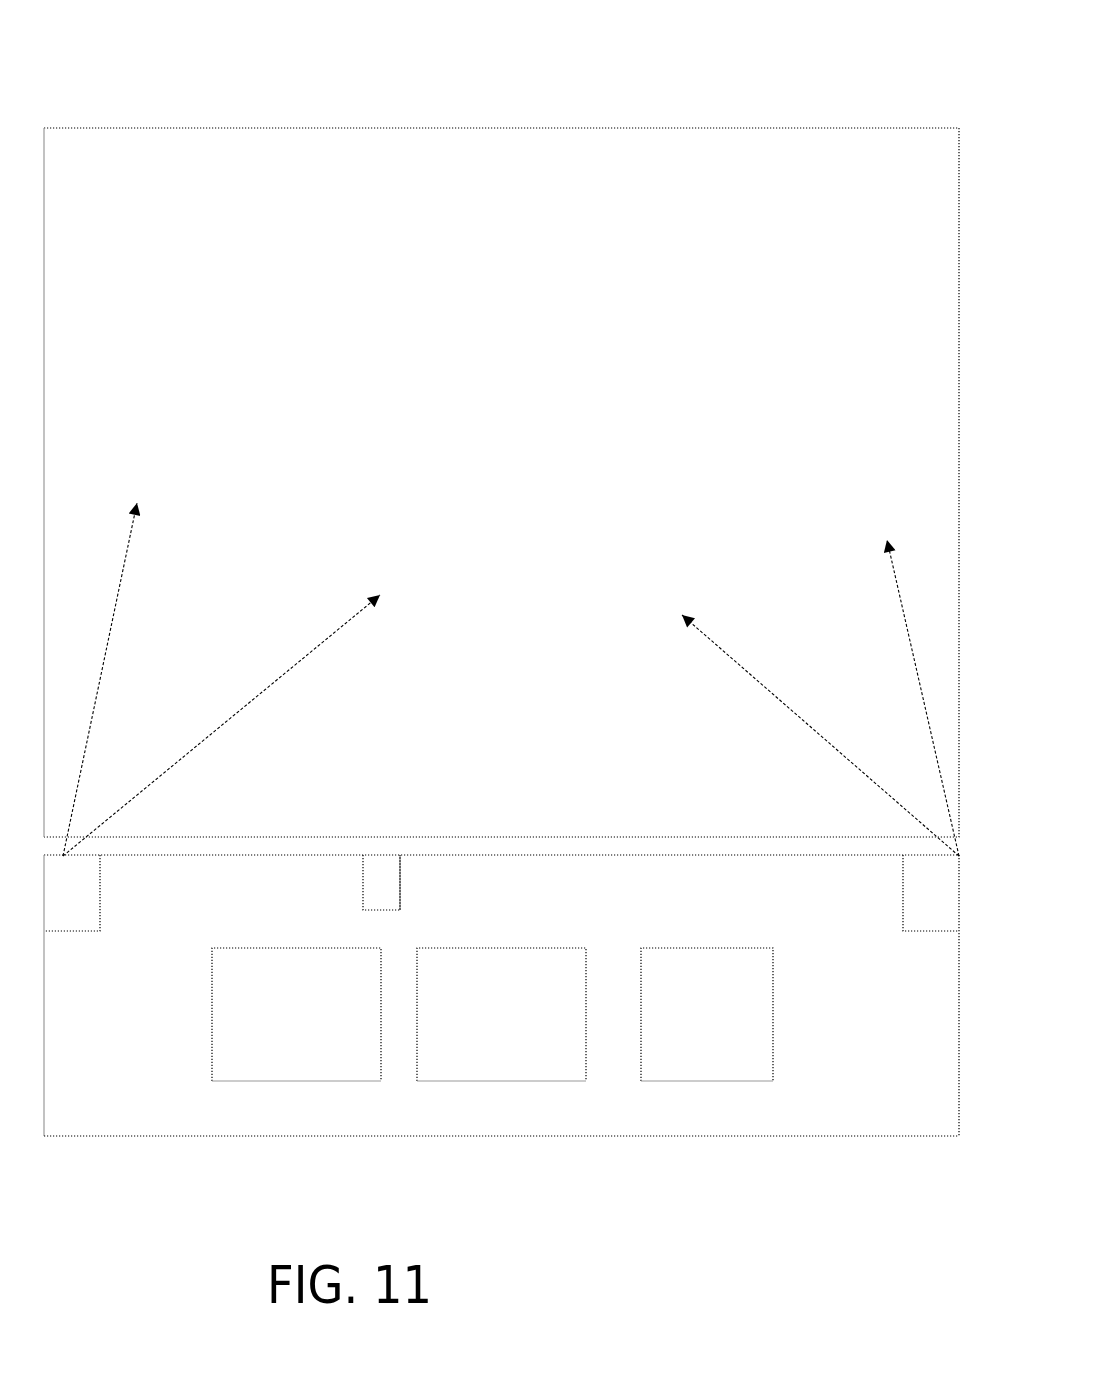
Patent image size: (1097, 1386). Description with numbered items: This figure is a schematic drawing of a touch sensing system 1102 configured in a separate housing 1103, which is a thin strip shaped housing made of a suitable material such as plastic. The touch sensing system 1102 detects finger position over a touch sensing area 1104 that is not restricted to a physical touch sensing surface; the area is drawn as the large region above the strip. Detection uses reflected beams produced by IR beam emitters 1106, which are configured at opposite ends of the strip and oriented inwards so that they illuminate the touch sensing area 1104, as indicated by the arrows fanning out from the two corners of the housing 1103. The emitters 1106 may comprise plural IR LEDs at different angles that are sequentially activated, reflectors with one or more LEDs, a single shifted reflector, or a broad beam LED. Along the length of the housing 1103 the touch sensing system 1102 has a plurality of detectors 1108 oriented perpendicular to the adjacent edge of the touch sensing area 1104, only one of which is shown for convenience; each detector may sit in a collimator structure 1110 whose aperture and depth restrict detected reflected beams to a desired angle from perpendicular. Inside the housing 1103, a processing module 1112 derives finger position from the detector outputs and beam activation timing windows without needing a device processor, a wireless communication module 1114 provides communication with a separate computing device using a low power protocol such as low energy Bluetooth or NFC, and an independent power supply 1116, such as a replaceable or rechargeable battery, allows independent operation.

The touch sensing system 1102 is at (792, 1155).
The housing 1103 is at (500, 1136).
The touch sensing area 1104 is at (651, 128).
The IR beam emitters 1106 is at (82, 931).
The detectors 1108 is at (363, 910).
The collimator structure 1110 is at (418, 875).
The processing module 1112 is at (296, 1014).
The wireless communication module 1114 is at (501, 1014).
The power supply 1116 is at (707, 1014).